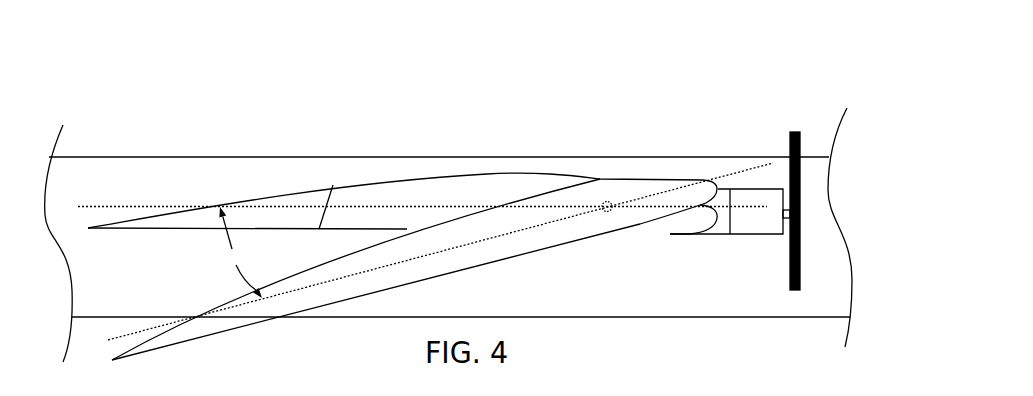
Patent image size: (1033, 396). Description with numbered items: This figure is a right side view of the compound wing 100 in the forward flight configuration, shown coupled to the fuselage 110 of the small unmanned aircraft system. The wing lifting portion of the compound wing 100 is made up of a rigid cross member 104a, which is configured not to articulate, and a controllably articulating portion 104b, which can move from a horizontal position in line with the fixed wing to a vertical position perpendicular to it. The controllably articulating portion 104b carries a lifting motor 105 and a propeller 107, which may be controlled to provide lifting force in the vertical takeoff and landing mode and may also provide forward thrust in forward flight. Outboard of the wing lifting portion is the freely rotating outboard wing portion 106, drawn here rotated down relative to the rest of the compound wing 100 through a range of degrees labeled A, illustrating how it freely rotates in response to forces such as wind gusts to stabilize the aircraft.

The compound wing 100 is at (439, 201).
The rigid cross member 104a is at (268, 180).
The controllably articulating portion 104b is at (430, 167).
The lifting motor 105 is at (758, 177).
The freely rotating outboard wing portion 106 is at (562, 260).
The propeller 107 is at (788, 120).
The fuselage 110 is at (597, 145).